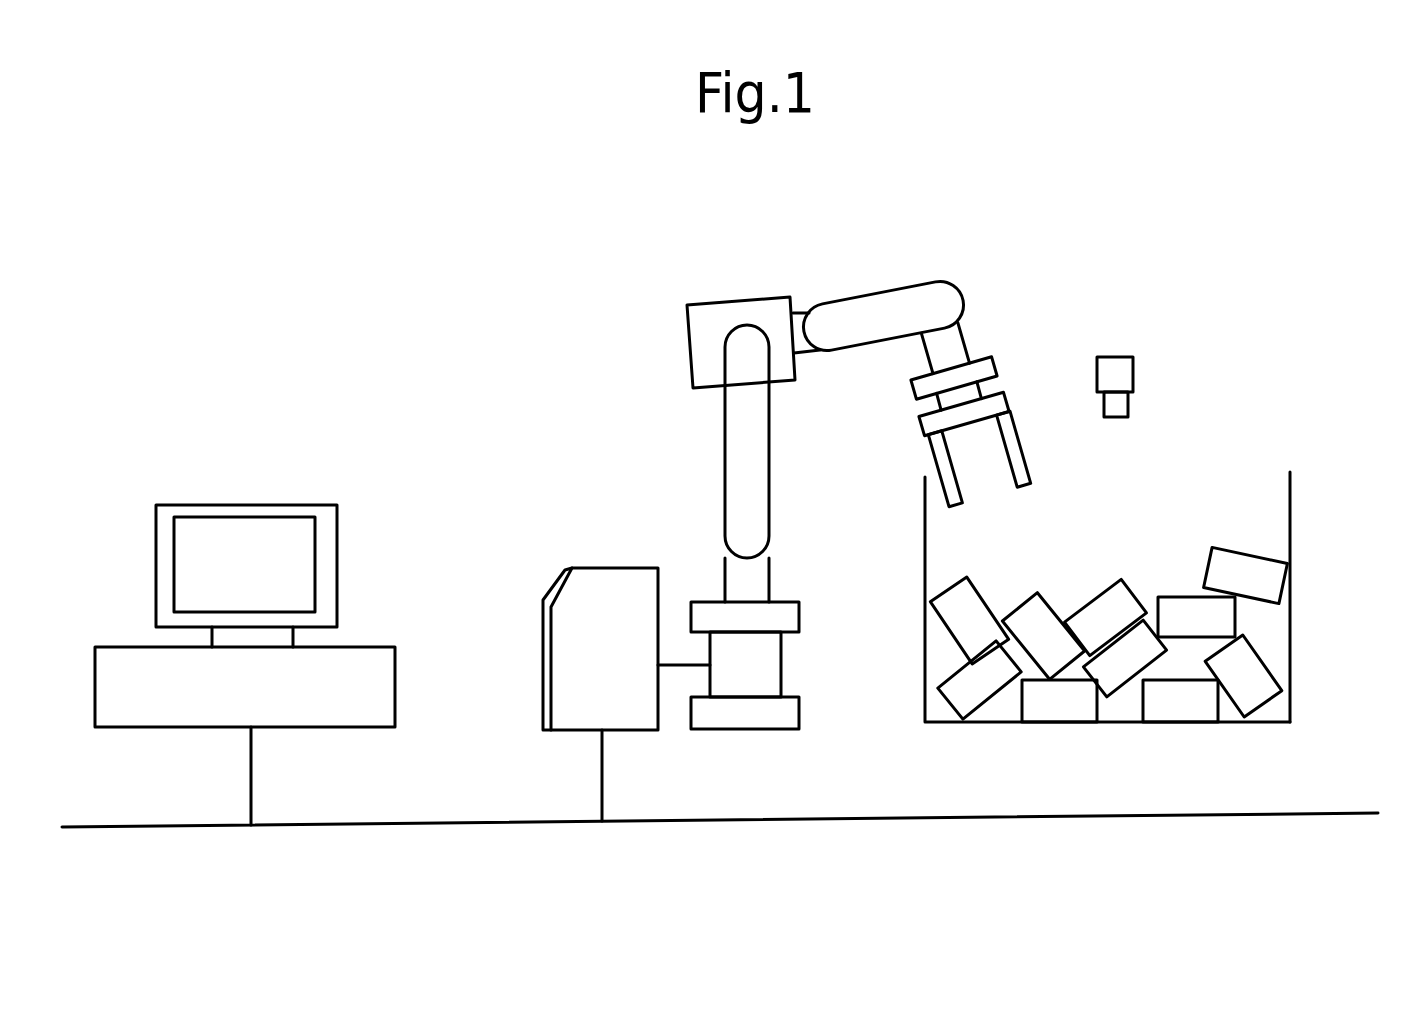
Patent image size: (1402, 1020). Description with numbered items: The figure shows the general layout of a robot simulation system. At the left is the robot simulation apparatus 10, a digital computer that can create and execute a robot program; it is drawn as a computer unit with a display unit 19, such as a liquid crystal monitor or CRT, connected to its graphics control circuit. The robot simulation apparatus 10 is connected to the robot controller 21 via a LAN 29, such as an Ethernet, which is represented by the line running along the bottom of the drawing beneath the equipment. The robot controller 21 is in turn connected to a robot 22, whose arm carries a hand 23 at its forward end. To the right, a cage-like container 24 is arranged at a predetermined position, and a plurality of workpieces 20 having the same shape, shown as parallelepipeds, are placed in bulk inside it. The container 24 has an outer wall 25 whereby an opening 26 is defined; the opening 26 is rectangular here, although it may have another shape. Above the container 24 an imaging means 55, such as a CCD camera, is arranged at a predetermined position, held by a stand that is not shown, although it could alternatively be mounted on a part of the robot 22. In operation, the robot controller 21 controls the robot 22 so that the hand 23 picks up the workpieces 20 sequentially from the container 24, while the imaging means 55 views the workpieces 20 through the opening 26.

The robot simulation apparatus 10 is at (267, 627).
The display unit 19 is at (258, 532).
The workpieces 20 is at (1055, 710).
The robot controller 21 is at (612, 588).
The robot 22 is at (879, 455).
The hand 23 is at (1013, 443).
The container 24 is at (1159, 598).
The outer wall 25 is at (1288, 538).
The opening 26 is at (1208, 485).
The LAN 29 is at (1148, 815).
The imaging means 55 is at (1115, 365).